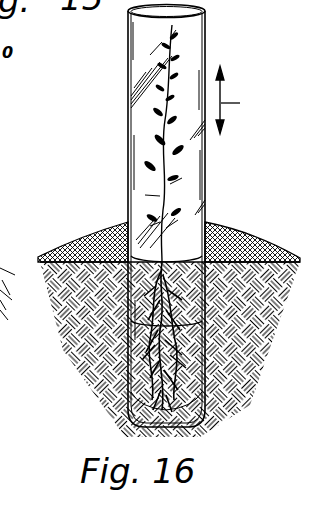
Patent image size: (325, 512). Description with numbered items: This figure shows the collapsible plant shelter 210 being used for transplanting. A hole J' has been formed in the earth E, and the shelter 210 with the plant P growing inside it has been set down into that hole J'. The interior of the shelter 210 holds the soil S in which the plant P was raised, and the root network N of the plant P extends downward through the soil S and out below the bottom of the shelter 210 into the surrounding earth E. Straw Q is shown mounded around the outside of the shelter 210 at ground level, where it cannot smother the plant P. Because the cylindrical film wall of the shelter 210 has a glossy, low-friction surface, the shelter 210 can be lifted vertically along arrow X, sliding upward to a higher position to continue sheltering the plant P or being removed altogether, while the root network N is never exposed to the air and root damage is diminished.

The collapsible plant shelter 210 is at (98, 152).
The plant P is at (162, 197).
The straw Q is at (220, 229).
The earth E is at (257, 296).
The soil S is at (128, 320).
The root network N is at (170, 345).
The hole J' is at (200, 408).
The arrow X is at (236, 100).